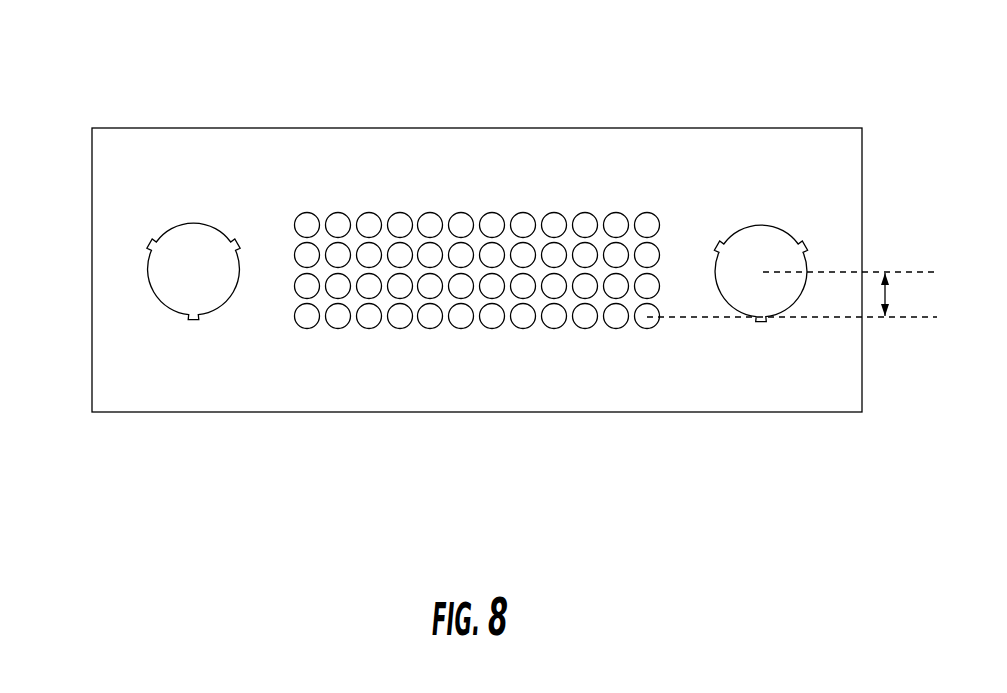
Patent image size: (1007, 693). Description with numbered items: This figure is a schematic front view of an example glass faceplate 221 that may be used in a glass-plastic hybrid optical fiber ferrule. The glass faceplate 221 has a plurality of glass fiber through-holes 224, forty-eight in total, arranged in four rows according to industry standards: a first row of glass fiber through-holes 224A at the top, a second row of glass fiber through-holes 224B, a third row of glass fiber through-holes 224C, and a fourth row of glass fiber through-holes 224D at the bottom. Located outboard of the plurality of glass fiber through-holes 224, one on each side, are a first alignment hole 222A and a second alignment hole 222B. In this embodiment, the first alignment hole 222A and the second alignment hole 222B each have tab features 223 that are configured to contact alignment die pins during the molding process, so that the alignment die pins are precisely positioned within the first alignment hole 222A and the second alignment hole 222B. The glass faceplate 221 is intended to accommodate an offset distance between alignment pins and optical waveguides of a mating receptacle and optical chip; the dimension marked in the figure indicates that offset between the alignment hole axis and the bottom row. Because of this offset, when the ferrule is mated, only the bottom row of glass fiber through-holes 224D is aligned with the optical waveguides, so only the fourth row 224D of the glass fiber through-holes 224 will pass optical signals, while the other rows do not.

The glass faceplate 221 is at (188, 95).
The first alignment hole 222A is at (195, 290).
The second alignment hole 222B is at (802, 293).
The tab features 223 is at (193, 316).
The plurality of glass fiber through-holes 224 is at (533, 338).
The first row of glass fiber through-holes 224A is at (293, 211).
The second row of glass fiber through-holes 224B is at (659, 252).
The third row of glass fiber through-holes 224C is at (659, 282).
The fourth row of glass fiber through-holes 224D is at (648, 331).